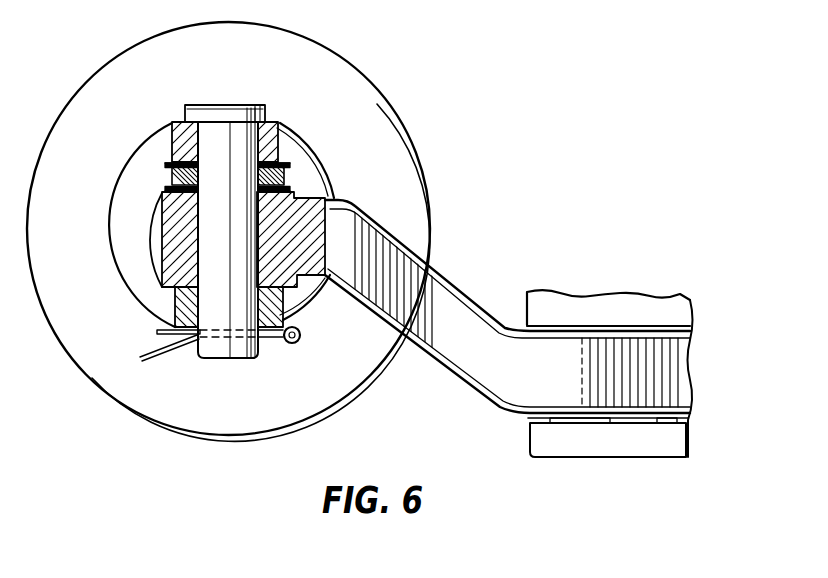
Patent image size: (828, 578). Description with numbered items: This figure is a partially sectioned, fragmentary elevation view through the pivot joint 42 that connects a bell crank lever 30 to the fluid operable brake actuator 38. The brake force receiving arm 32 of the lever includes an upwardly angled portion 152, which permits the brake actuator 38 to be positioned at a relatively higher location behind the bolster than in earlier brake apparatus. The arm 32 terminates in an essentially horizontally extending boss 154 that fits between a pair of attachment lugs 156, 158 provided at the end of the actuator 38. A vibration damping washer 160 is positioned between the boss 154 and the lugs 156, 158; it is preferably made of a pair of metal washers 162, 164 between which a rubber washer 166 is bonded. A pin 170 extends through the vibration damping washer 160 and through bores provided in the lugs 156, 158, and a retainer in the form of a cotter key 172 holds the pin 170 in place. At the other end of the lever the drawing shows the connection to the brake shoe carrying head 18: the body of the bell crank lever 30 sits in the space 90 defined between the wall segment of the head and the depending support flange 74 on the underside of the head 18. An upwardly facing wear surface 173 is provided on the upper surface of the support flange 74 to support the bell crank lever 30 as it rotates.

The brake shoe carrying head 18 is at (658, 447).
The bell crank lever 30 is at (665, 363).
The brake force receiving arm 32 is at (460, 293).
The brake actuator 38 is at (377, 108).
The pivot joint 42 is at (156, 185).
The support flange 74 is at (563, 462).
The space 90 is at (688, 425).
The upwardly angled portion 152 is at (458, 345).
The boss 154 is at (169, 224).
The attachment lug 156 is at (276, 135).
The attachment lug 158 is at (322, 305).
The vibration damping washer 160 is at (292, 182).
The metal washer 162 is at (288, 164).
The metal washer 164 is at (277, 208).
The rubber washer 166 is at (296, 190).
The pin 170 is at (227, 140).
The cotter key 172 is at (147, 360).
The wear surface 173 is at (588, 420).